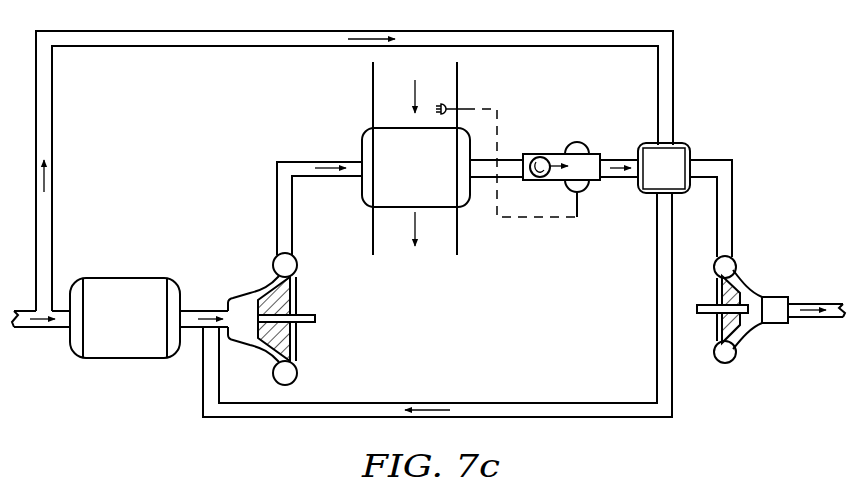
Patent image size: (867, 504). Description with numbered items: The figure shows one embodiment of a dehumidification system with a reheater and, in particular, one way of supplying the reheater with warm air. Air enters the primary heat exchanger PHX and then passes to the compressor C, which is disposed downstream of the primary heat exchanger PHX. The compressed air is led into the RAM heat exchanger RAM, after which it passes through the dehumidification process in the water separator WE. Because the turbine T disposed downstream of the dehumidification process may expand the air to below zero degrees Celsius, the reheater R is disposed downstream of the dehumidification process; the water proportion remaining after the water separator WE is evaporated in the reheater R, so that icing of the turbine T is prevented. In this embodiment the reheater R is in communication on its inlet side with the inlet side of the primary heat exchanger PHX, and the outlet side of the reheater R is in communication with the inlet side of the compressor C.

The primary heat exchanger PHX is at (125, 318).
The compressor C is at (280, 322).
The RAM heat exchanger RAM is at (469, 158).
The water separator WE is at (561, 173).
The reheater R is at (664, 168).
The turbine T is at (742, 324).